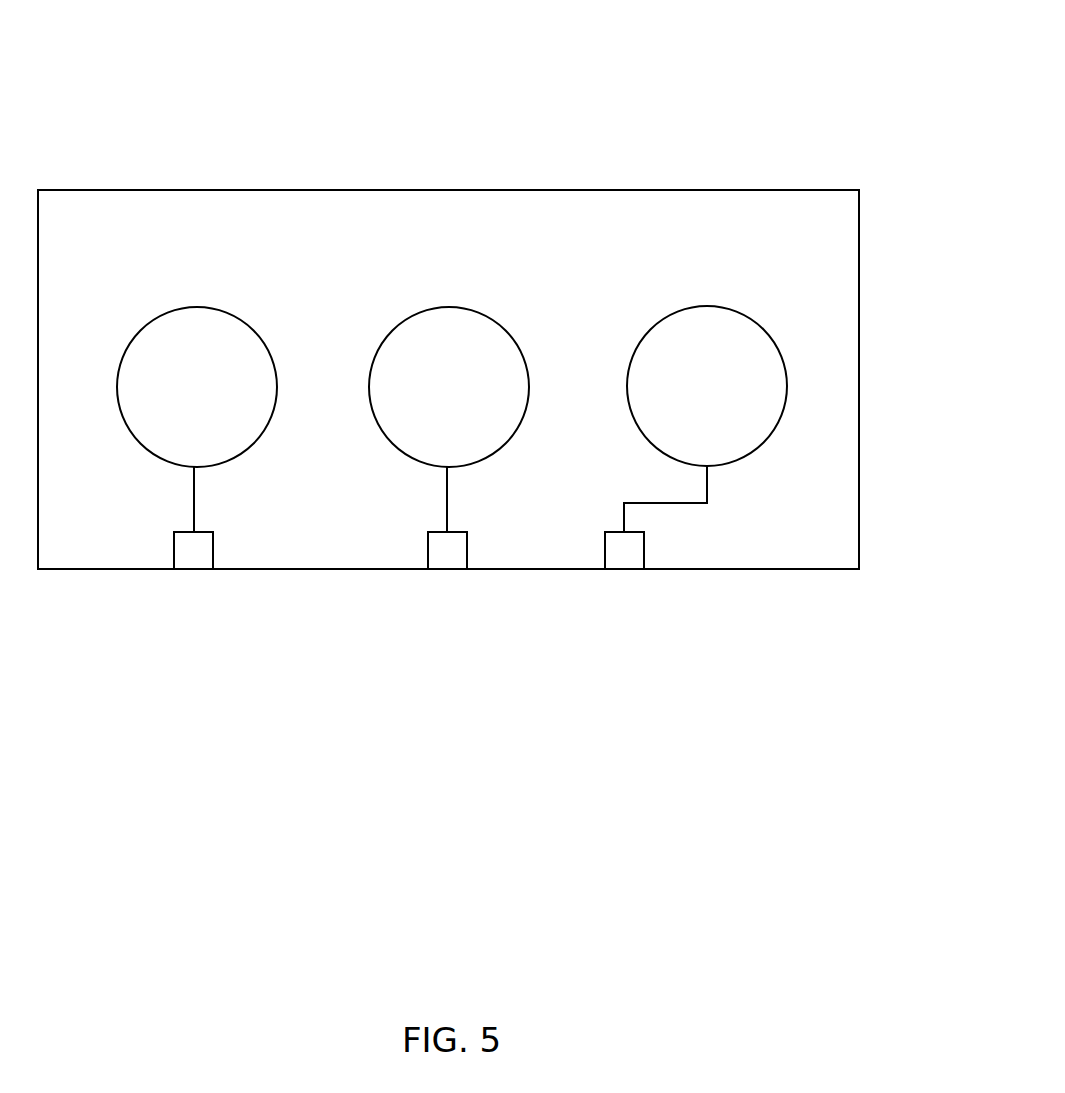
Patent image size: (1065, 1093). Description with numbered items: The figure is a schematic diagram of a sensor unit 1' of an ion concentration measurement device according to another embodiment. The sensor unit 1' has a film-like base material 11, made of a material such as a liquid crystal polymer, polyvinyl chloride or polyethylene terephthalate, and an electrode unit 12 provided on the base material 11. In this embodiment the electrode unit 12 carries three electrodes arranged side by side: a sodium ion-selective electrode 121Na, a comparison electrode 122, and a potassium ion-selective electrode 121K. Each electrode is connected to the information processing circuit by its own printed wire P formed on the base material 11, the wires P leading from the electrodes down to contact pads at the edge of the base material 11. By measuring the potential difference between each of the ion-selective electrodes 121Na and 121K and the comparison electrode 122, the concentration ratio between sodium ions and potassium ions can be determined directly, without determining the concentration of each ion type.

The sensor unit 1' is at (496, 336).
The base material 11 is at (707, 189).
The electrode unit 12 is at (509, 292).
The sodium ion-selective electrode 121Na is at (135, 332).
The comparison electrode 122 is at (388, 330).
The potassium ion-selective electrode 121K is at (782, 352).
The printed wire P is at (194, 502).